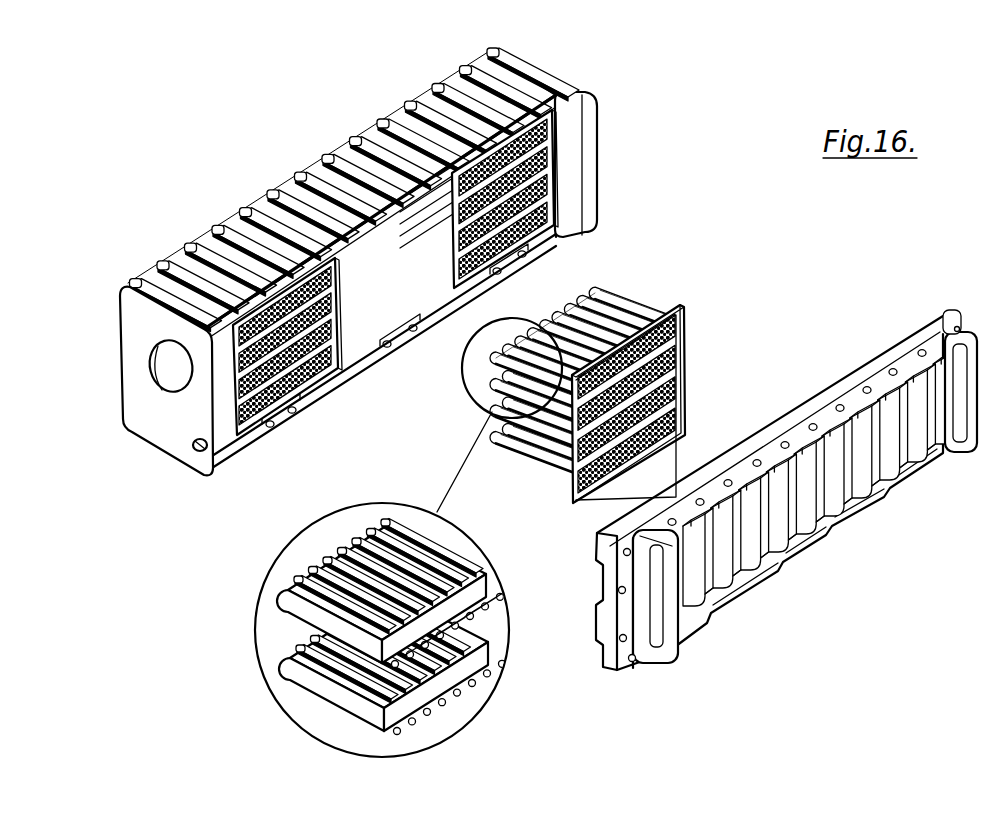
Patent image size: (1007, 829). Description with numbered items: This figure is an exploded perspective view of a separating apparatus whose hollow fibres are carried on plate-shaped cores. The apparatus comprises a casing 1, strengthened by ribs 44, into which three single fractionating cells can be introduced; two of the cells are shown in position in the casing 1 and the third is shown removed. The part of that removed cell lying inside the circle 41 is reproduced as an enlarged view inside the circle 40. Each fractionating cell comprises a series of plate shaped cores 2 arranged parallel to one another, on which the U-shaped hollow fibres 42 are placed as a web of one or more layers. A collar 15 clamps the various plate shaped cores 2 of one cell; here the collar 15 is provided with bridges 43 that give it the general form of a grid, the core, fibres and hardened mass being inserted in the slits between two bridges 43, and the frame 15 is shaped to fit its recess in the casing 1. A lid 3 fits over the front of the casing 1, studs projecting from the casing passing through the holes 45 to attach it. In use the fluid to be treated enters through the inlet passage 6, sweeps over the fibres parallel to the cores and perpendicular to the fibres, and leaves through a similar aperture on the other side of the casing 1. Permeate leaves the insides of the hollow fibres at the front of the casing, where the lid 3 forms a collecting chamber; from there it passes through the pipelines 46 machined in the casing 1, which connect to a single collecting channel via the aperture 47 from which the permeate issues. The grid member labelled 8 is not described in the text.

The casing 1 is at (604, 98).
The plate shaped cores 2 is at (492, 360).
The lid 3 is at (760, 568).
The inlet passage 6 is at (160, 354).
The filter plate 8 is at (672, 333).
The collar 15 is at (553, 148).
The circle 40 is at (254, 699).
The circle 41 is at (455, 397).
The hollow fibres 42 is at (598, 280).
The bridges 43 is at (313, 328).
The ribs 44 is at (348, 133).
The holes 45 is at (893, 369).
The pipelines 46 is at (275, 428).
The aperture 47 is at (193, 451).